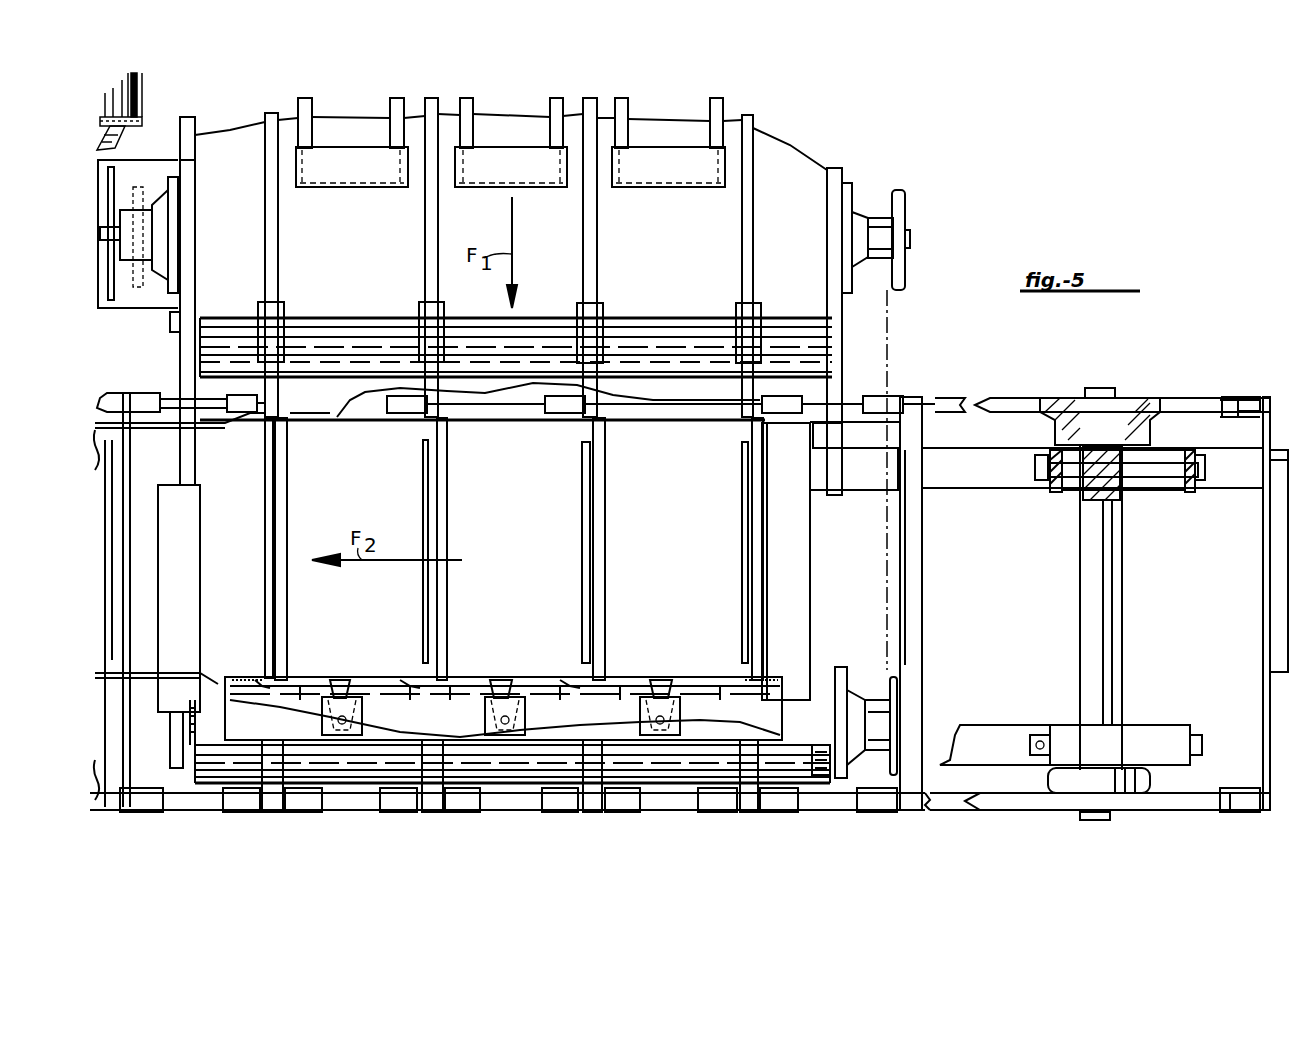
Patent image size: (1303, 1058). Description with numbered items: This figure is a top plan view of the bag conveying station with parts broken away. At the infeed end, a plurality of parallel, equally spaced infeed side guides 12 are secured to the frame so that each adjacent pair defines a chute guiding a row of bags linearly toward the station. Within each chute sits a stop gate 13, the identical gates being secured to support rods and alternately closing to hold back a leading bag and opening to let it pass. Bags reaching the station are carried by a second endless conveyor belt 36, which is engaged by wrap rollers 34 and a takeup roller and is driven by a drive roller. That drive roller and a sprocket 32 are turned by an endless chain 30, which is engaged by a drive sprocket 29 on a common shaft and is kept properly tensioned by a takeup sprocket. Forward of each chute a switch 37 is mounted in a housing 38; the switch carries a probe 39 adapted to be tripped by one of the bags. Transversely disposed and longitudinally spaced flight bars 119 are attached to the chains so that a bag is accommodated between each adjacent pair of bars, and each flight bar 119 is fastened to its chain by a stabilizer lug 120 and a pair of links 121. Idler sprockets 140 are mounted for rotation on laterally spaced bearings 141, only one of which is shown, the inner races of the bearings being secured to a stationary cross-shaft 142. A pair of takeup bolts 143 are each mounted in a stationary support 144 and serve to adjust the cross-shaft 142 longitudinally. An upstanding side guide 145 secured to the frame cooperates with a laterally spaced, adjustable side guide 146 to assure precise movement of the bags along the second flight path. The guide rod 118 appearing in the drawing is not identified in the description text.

The infeed side guide 12 is at (425, 258).
The stop gate 13 is at (346, 172).
The drive sprocket 29 is at (905, 210).
The endless chain 30 is at (895, 323).
The sprocket 32 is at (883, 762).
The wrap roller 34 is at (815, 778).
The second endless conveyor belt 36 is at (528, 541).
The switch 37 is at (478, 717).
The housing 38 is at (263, 731).
The probe 39 is at (500, 682).
The guide rod 118 is at (523, 410).
The flight bar 119 is at (748, 555).
The stabilizer lug 120 is at (150, 803).
The link 121 is at (1240, 398).
The idler sprocket 140 is at (1185, 402).
The bearing 141 is at (1060, 440).
The cross-shaft 142 is at (1085, 662).
The takeup bolt 143 is at (1150, 480).
The stationary support 144 is at (1057, 490).
The upstanding side guide 145 is at (158, 400).
The adjustable side guide 146 is at (185, 672).